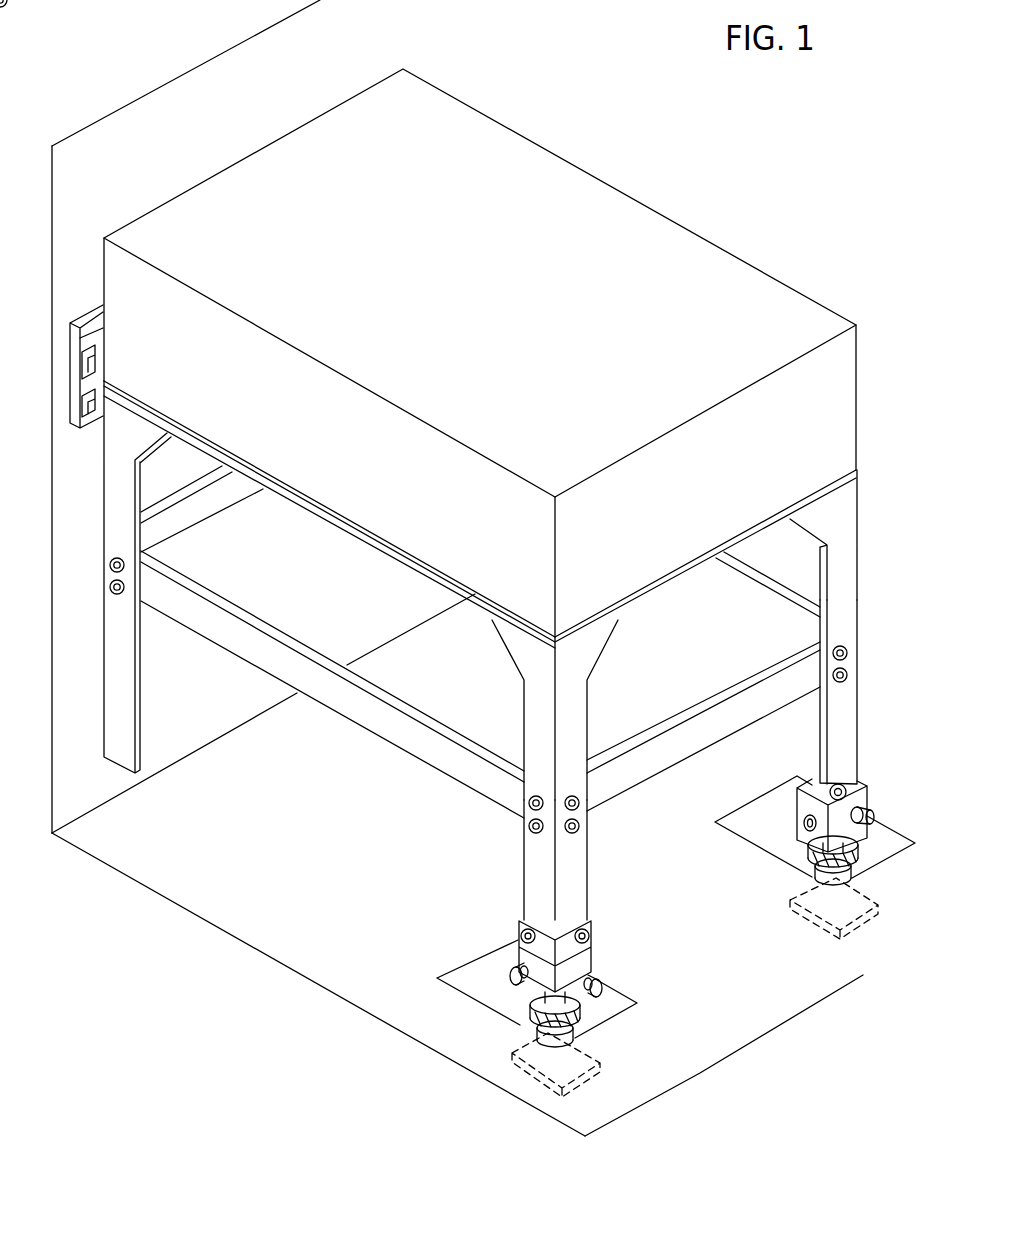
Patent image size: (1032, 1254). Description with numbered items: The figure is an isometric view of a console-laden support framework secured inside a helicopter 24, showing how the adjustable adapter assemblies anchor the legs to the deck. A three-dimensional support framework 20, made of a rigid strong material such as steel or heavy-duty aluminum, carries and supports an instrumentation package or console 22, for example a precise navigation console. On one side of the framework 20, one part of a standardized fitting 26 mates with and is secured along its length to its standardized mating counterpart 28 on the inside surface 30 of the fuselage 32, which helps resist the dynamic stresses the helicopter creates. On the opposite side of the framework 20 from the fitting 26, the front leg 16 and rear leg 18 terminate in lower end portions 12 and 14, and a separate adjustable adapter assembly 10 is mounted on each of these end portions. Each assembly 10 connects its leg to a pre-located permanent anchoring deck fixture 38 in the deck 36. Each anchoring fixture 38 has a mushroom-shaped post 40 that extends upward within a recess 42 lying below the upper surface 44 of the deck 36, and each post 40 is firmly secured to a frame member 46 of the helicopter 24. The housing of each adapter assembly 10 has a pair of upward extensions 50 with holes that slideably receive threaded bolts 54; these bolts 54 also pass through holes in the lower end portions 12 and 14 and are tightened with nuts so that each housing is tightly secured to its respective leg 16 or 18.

The adjustable adapter assembly 10 is at (632, 950).
The lower end portion 12 is at (540, 893).
The lower end portion 14 is at (838, 742).
The front leg 16 is at (538, 712).
The rear leg 18 is at (838, 552).
The three-dimensional support framework 20 is at (866, 649).
The console 22 is at (633, 197).
The helicopter 24 is at (256, 134).
The standardized fitting 26 is at (84, 428).
The standardized mating counterpart 28 is at (92, 306).
The inside surface 30 is at (186, 73).
The fuselage 32 is at (263, 469).
The deck 36 is at (779, 991).
The permanent anchoring deck fixture 38 is at (662, 964).
The mushroom-shaped post 40 is at (547, 1026).
The recess 42 is at (612, 1007).
The upper surface 44 is at (884, 985).
The frame member 46 is at (598, 1064).
The upward extensions 50 is at (522, 970).
The threaded bolt 54 is at (848, 791).